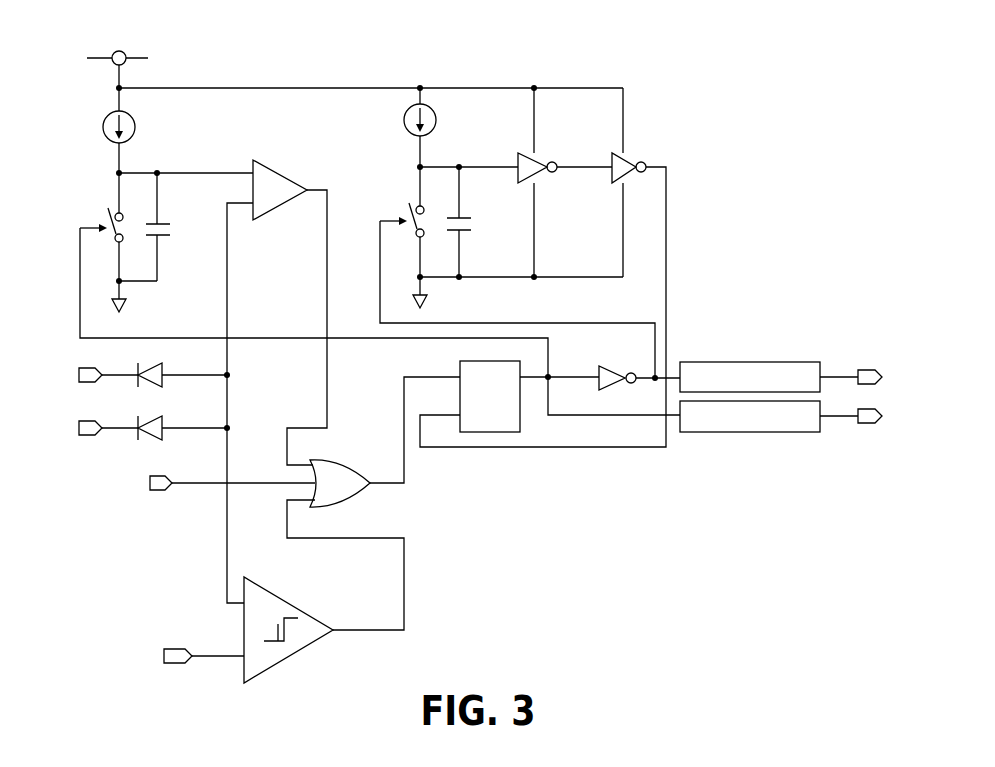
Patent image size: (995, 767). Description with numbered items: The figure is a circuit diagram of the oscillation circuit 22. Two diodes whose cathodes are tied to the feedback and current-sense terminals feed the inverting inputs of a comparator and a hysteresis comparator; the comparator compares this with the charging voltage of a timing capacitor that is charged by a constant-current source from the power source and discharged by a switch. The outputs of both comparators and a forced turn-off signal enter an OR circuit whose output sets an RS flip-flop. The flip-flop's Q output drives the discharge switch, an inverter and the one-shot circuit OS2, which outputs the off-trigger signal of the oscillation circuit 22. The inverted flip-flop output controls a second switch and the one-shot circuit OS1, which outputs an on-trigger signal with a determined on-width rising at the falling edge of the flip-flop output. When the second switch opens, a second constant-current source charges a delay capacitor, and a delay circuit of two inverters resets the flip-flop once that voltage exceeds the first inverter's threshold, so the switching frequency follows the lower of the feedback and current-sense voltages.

The oscillation circuit 22 is at (774, 154).
The one-shot circuit OS1 is at (750, 361).
The one-shot circuit OS2 is at (750, 433).